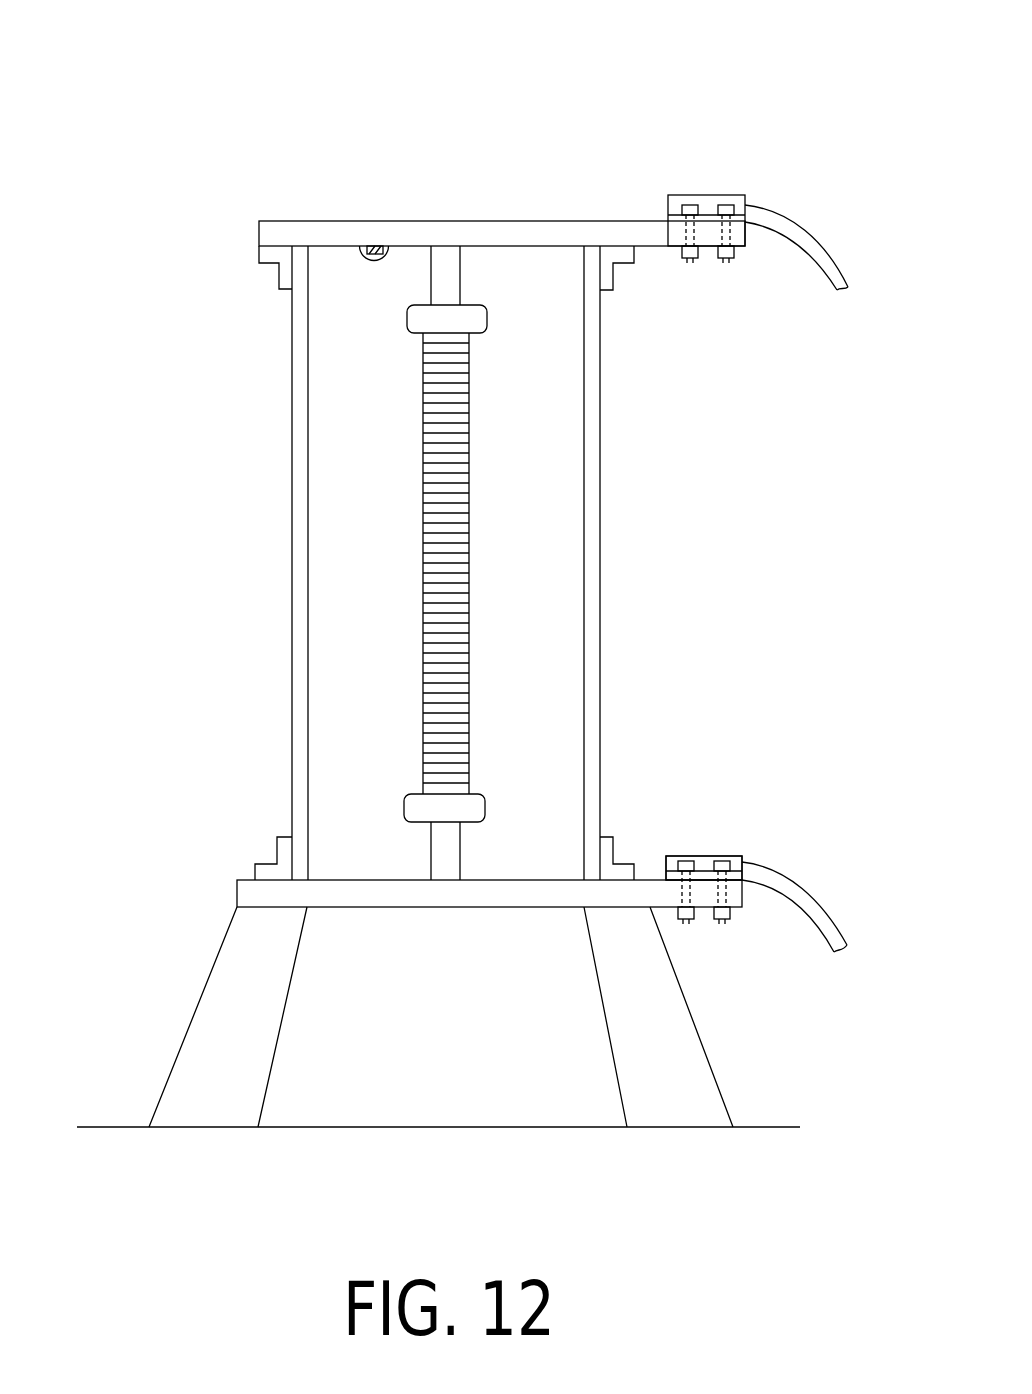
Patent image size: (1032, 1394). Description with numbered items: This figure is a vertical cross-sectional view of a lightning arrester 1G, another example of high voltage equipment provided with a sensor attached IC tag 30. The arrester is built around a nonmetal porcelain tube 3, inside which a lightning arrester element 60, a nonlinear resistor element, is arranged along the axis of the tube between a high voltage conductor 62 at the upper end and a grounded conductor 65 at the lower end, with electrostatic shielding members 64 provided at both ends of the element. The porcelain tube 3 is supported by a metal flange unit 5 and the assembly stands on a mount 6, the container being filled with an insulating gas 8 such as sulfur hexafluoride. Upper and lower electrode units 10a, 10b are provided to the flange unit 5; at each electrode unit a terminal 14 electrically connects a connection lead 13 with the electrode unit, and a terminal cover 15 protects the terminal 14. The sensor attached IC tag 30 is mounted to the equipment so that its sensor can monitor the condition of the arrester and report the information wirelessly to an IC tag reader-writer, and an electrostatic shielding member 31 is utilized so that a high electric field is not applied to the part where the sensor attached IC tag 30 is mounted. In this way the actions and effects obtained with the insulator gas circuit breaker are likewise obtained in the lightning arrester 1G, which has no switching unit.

The lightning arrester 1G is at (562, 116).
The porcelain tube 3 is at (290, 410).
The flange unit 5 is at (496, 220).
The mount 6 is at (200, 990).
The insulating gas 8 is at (490, 503).
The upper electrode unit 10a is at (677, 179).
The lower electrode unit 10b is at (695, 809).
The connection lead 13 is at (831, 247).
The terminal 14 is at (743, 250).
The terminal cover 15 is at (708, 195).
The sensor attached IC tag 30 is at (372, 245).
The electrostatic shielding member 31 is at (381, 245).
The lightning arrester element 60 is at (422, 572).
The high voltage conductor 62 is at (431, 284).
The electrostatic shielding member 64 is at (487, 318).
The grounded conductor 65 is at (428, 857).